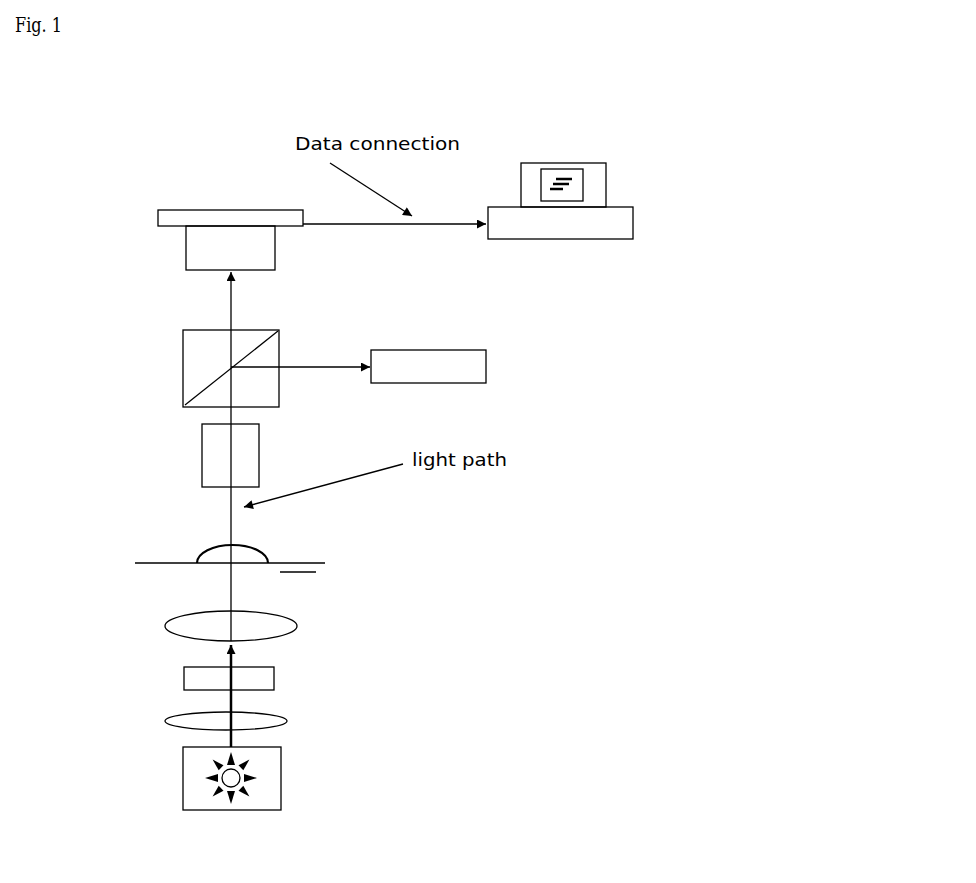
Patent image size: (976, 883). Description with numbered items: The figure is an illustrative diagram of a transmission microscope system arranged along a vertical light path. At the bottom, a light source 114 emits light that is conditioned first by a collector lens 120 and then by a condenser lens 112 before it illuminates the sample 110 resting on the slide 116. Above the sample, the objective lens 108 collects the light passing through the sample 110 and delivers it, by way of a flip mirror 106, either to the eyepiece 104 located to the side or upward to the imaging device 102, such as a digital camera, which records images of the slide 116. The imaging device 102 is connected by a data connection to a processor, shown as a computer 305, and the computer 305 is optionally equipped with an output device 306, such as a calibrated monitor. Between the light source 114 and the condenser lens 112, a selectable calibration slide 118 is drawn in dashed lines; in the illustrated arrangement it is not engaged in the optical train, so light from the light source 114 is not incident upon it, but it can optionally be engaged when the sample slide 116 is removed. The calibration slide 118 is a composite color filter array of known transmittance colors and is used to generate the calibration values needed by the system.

The imaging device 102 is at (182, 243).
The eyepiece 104 is at (387, 346).
The flip mirror 106 is at (170, 367).
The objective lens 108 is at (198, 453).
The sample 110 is at (196, 552).
The condenser lens 112 is at (158, 620).
The light source 114 is at (181, 778).
The slide 116 is at (320, 573).
The selectable calibration slide 118 is at (293, 681).
The collector lens 120 is at (148, 716).
The computer 305 is at (599, 258).
The output device 306 is at (611, 183).